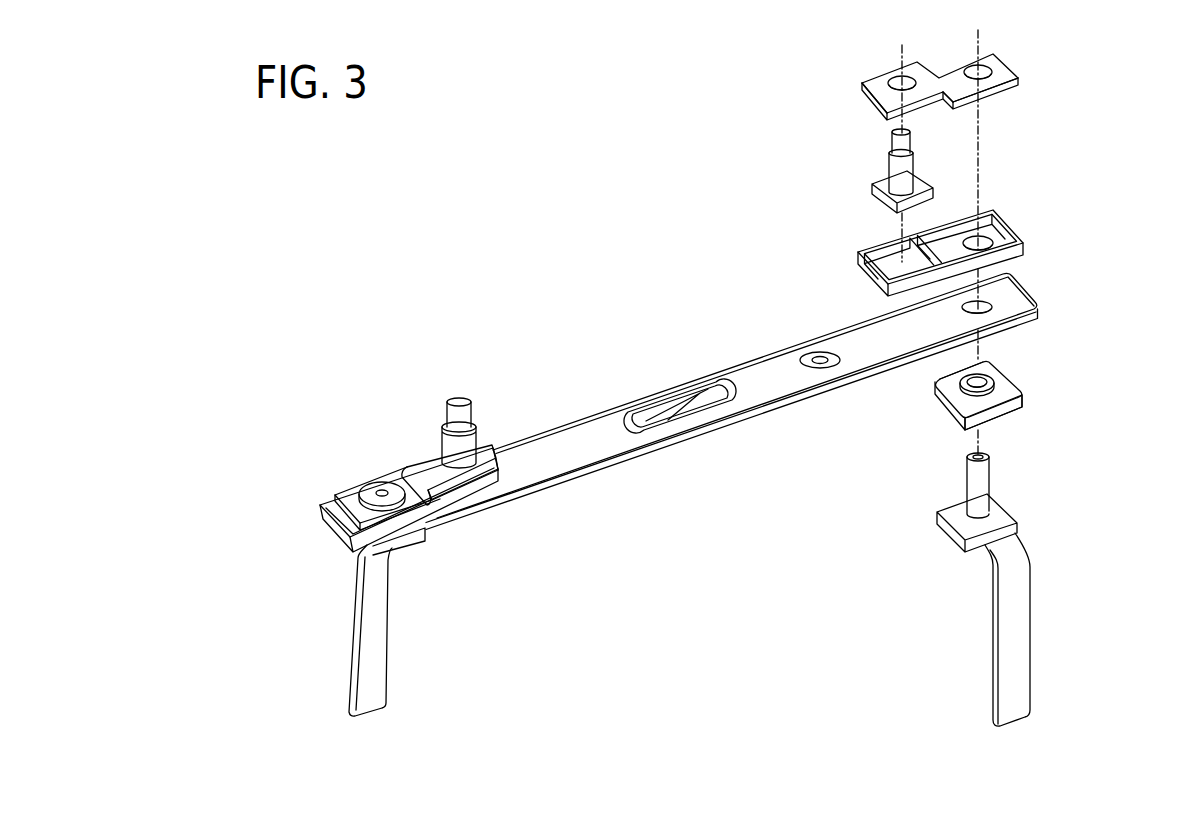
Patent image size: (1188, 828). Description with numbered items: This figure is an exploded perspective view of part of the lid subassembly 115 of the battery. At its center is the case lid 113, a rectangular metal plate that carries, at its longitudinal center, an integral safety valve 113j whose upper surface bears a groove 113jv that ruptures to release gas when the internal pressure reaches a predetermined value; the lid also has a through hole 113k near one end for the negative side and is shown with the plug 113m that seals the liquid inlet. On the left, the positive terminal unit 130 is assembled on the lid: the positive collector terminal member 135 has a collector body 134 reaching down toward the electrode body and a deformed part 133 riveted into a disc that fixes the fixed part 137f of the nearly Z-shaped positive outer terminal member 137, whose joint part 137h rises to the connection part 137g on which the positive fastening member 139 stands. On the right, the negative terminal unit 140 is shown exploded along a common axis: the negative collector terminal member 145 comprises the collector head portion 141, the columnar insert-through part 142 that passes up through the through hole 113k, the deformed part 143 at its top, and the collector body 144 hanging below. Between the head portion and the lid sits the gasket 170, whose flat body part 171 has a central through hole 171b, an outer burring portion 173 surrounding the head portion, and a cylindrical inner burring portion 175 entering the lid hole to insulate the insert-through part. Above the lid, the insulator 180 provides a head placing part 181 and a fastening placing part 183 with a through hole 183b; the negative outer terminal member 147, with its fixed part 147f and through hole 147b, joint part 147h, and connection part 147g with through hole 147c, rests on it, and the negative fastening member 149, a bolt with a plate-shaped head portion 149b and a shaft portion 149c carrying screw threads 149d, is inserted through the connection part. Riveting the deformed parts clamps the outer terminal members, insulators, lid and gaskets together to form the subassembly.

The case lid 113 is at (645, 450).
The safety valve 113j is at (683, 405).
The groove 113jv is at (690, 420).
The through hole 113k is at (990, 296).
The plug 113m is at (817, 357).
The lid subassembly 115 is at (611, 326).
The positive terminal unit 130 is at (388, 516).
The deformed part 133 is at (373, 491).
The collector body 134 is at (360, 670).
The positive collector terminal member 135 is at (378, 652).
The positive outer terminal member 137 is at (420, 458).
The fixed part 137f is at (342, 495).
The connection part 137g is at (433, 453).
The joint part 137h is at (414, 462).
The positive fastening member 139 is at (466, 418).
The negative terminal unit 140 is at (953, 377).
The collector head portion 141 is at (960, 532).
The insert-through part 142 is at (972, 492).
The deformed part 143 is at (968, 466).
The collector body 144 is at (1003, 670).
The negative collector terminal member 145 is at (1022, 645).
The negative outer terminal member 147 is at (1006, 74).
The through hole 147b is at (986, 70).
The through hole 147c is at (896, 80).
The fixed part 147f is at (1010, 88).
The connection part 147g is at (873, 85).
The joint part 147h is at (948, 103).
The negative fastening member 149 is at (898, 180).
The head portion 149b is at (920, 168).
The shaft portion 149c is at (892, 168).
The screw threads 149d is at (891, 142).
The gasket 170 is at (948, 407).
The body part 171 is at (1007, 383).
The through hole 171b is at (950, 387).
The outer burring portion 173 is at (1003, 407).
The inner burring portion 175 is at (992, 374).
The insulator 180 is at (483, 483).
The head placing part 181 is at (866, 244).
The fastening placing part 183 is at (993, 230).
The through hole 183b is at (988, 213).